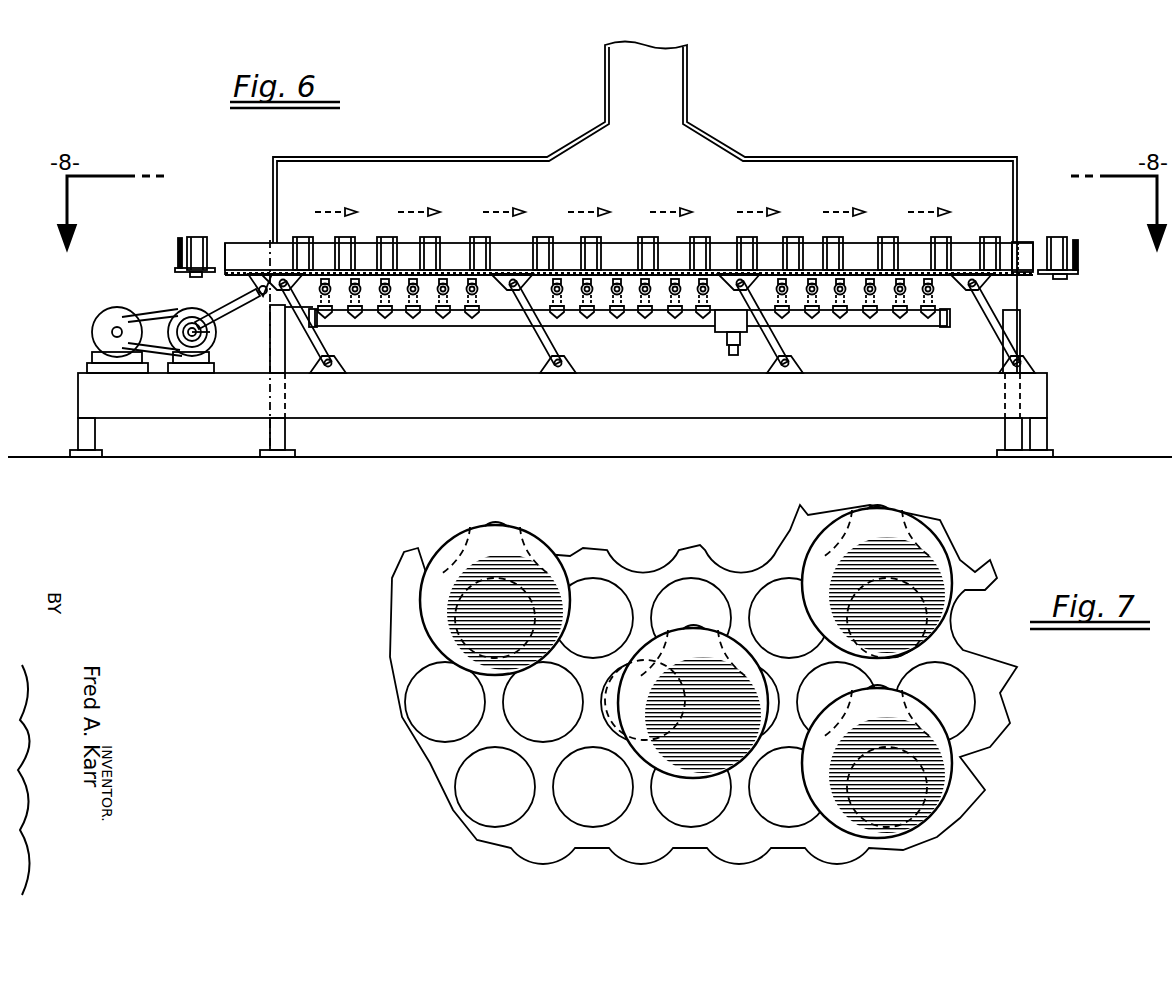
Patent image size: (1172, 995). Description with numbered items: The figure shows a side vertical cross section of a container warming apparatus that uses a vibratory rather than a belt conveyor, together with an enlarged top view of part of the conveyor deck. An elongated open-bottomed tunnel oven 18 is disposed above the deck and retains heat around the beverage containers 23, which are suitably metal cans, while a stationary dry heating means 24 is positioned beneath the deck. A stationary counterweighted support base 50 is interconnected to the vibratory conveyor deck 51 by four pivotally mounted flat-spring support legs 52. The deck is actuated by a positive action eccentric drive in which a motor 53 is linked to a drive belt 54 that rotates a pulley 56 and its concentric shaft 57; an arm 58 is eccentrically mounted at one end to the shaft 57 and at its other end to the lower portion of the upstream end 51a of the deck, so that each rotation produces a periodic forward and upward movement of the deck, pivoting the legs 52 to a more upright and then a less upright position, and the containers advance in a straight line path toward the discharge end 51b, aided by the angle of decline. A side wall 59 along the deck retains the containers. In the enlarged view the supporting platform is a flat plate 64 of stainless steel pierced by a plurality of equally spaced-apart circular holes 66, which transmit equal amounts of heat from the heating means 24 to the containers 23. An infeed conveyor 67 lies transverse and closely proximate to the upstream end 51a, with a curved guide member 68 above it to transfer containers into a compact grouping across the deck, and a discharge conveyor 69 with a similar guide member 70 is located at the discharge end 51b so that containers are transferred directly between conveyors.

In FIG. 6, the tunnel oven 18 is at (1012, 150).
In FIG. 6, the beverage containers 23 is at (493, 250).
In FIG. 7, the beverage containers 23 is at (537, 543).
In FIG. 6, the dry heating means 24 is at (633, 322).
In FIG. 6, the support base 50 is at (1047, 388).
In FIG. 6, the vibratory conveyor deck 51 is at (644, 226).
In FIG. 6, the upstream end of deck 51a is at (238, 270).
In FIG. 6, the discharge end of deck 51b is at (1010, 258).
In FIG. 6, the flat-spring support legs 52 is at (326, 349).
In FIG. 6, the motor 53 is at (118, 308).
In FIG. 6, the drive belt 54 is at (153, 316).
In FIG. 6, the pulley 56 is at (210, 346).
In FIG. 6, the shaft 57 is at (212, 333).
In FIG. 6, the arm 58 is at (236, 307).
In FIG. 6, the side wall 59 is at (1027, 245).
In FIG. 7, the flat plate 64 is at (973, 573).
In FIG. 7, the circular holes 66 is at (684, 594).
In FIG. 6, the infeed conveyor 67 is at (213, 265).
In FIG. 6, the curved guide member 68 is at (177, 257).
In FIG. 6, the discharge conveyor 69 is at (1077, 279).
In FIG. 6, the guide member 70 is at (1078, 240).